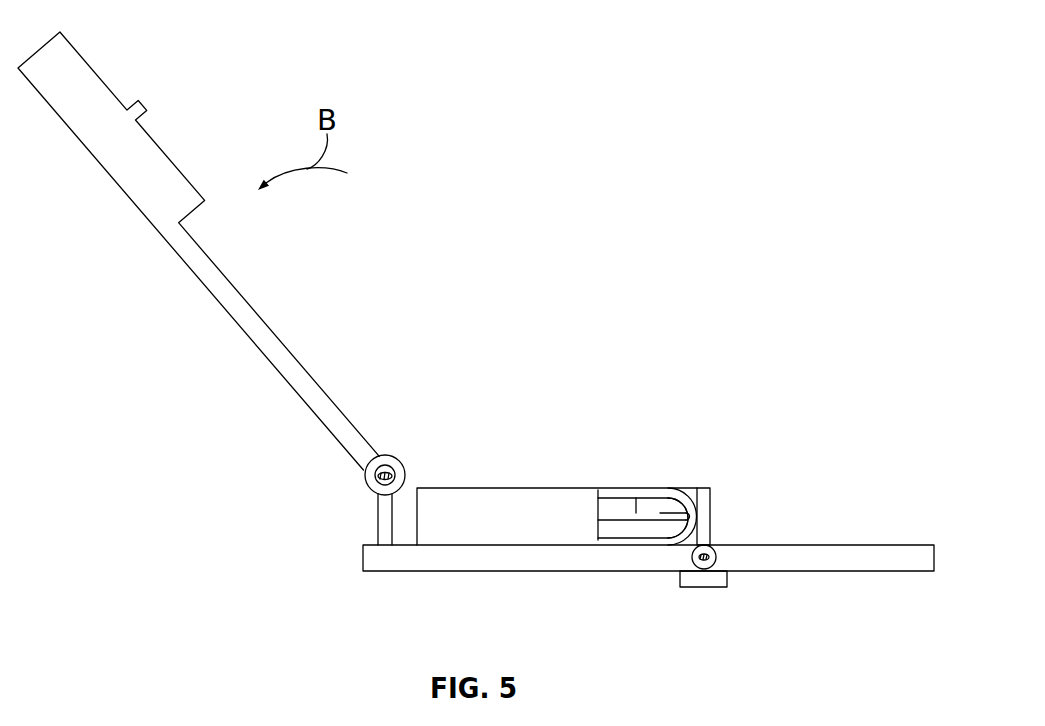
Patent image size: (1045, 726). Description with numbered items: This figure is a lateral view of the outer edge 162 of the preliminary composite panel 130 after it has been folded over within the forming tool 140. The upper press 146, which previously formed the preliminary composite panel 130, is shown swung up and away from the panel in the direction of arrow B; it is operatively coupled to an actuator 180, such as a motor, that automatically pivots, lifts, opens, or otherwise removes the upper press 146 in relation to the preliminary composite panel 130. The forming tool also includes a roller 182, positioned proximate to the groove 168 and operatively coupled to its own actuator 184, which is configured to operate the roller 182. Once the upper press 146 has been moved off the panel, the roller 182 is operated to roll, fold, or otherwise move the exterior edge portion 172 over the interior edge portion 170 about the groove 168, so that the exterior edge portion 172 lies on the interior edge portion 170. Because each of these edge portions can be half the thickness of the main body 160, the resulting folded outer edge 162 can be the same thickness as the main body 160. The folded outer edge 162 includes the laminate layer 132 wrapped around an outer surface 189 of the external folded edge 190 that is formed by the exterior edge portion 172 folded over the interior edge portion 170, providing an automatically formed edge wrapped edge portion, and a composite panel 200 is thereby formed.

The preliminary composite panel 130 is at (515, 487).
The laminate layer 132 is at (684, 494).
The forming tool 140 is at (198, 251).
The upper press 146 is at (178, 255).
The main body 160 is at (533, 505).
The outer edge 162 is at (626, 530).
The groove 168 is at (668, 503).
The interior edge portion 170 is at (608, 526).
The exterior edge portion 172 is at (612, 508).
The actuator 180 is at (368, 487).
The roller 182 is at (693, 552).
The actuator 184 is at (702, 587).
The outer surface 189 is at (690, 520).
The external folded edge 190 is at (635, 503).
The composite panel 200 is at (601, 515).